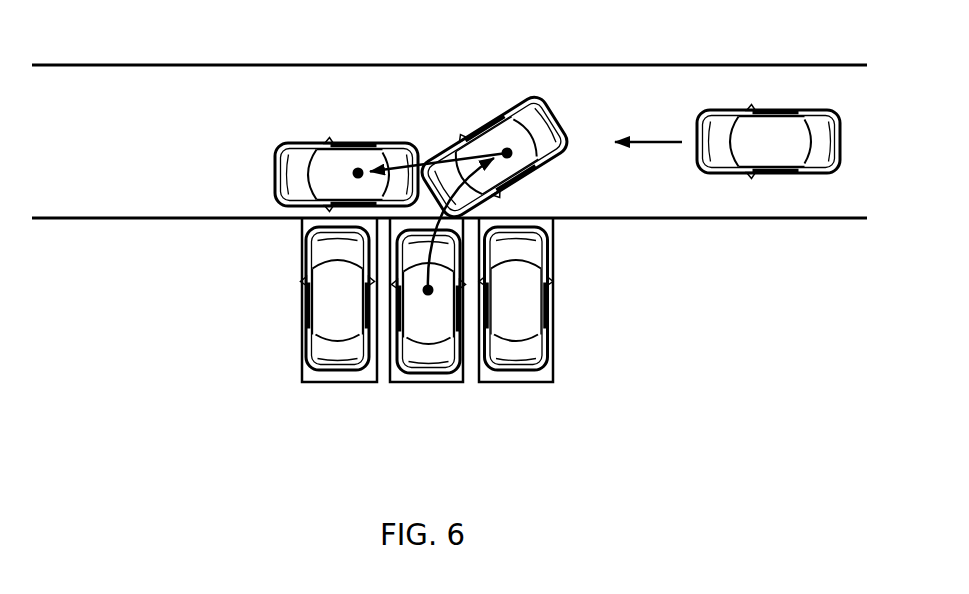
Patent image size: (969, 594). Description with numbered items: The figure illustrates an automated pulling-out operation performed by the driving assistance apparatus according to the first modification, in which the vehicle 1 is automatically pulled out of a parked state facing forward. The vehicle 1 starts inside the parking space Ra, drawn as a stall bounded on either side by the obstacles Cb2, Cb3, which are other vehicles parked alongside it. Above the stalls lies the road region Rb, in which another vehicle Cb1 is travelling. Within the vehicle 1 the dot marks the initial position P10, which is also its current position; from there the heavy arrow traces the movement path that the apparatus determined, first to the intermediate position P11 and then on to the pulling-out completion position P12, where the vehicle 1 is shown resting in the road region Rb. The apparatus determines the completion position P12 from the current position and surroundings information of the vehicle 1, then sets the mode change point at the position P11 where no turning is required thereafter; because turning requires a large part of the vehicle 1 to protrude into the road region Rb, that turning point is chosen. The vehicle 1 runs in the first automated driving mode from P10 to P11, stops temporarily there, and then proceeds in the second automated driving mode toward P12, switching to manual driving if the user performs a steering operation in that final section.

The road region Rb is at (192, 85).
The parking space Ra is at (400, 370).
The another vehicle Cb1 is at (775, 110).
The obstacle Cb2 is at (328, 355).
The obstacle Cb3 is at (525, 357).
The vehicle 1 is at (437, 358).
The initial position P10 is at (428, 295).
The intermediate position P11 is at (506, 148).
The pulling-out completion position P12 is at (357, 168).